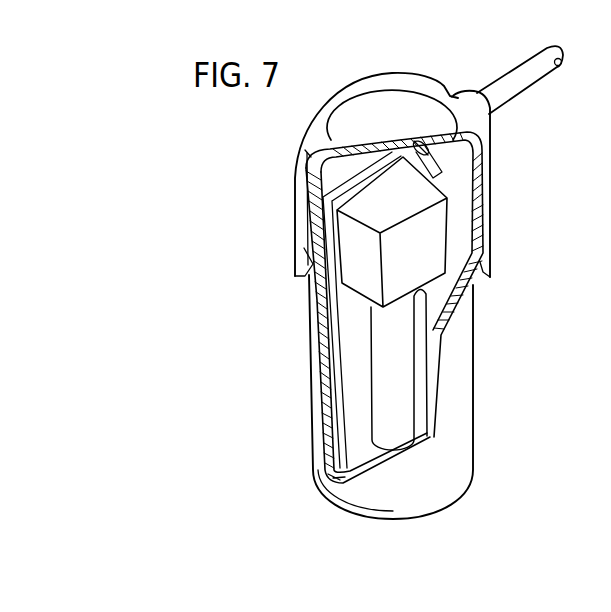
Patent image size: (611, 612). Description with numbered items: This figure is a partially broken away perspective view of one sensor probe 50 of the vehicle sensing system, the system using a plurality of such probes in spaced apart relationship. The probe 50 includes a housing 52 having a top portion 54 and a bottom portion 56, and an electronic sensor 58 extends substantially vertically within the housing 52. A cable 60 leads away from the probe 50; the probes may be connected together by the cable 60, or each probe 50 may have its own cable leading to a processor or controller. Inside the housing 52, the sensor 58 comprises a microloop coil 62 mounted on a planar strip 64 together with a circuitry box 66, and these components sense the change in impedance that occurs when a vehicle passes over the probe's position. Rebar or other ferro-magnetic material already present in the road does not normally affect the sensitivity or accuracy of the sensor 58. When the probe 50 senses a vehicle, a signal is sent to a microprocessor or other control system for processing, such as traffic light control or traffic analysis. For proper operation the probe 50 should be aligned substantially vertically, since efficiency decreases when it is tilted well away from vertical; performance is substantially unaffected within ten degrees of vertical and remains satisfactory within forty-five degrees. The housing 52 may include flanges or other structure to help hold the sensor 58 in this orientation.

The sensor probe 50 is at (508, 247).
The housing 52 is at (300, 233).
The top portion 54 is at (324, 97).
The bottom portion 56 is at (443, 489).
The electronic sensor 58 is at (450, 211).
The cable 60 is at (503, 103).
The microloop coil 62 is at (400, 376).
The planar strip 64 is at (348, 320).
The circuitry box 66 is at (353, 247).